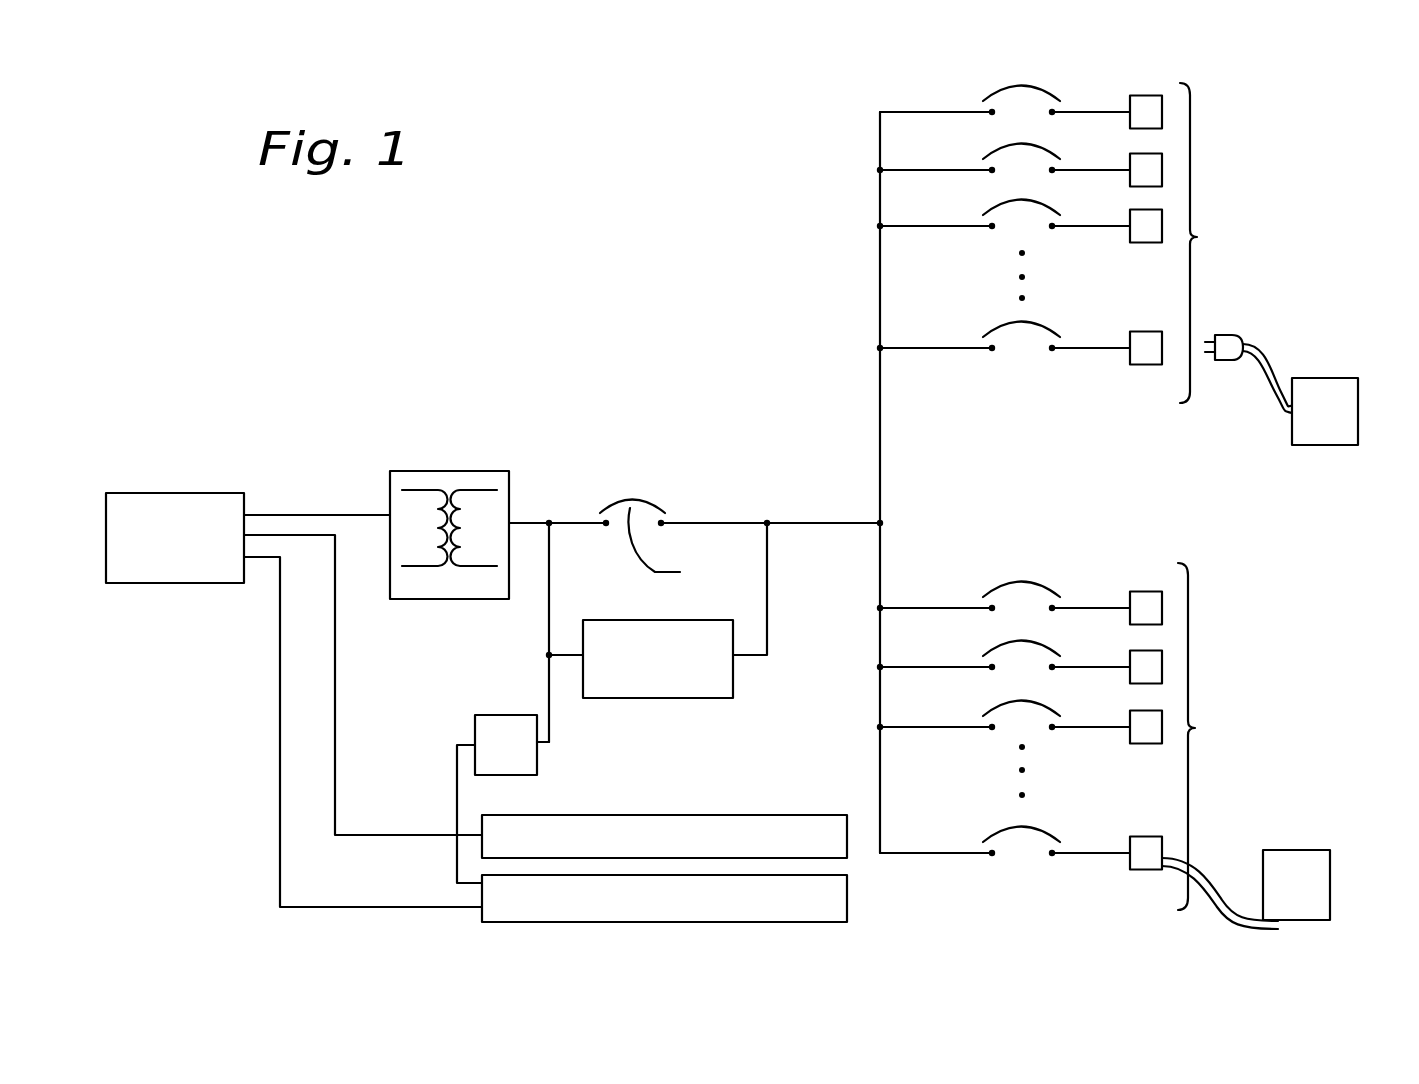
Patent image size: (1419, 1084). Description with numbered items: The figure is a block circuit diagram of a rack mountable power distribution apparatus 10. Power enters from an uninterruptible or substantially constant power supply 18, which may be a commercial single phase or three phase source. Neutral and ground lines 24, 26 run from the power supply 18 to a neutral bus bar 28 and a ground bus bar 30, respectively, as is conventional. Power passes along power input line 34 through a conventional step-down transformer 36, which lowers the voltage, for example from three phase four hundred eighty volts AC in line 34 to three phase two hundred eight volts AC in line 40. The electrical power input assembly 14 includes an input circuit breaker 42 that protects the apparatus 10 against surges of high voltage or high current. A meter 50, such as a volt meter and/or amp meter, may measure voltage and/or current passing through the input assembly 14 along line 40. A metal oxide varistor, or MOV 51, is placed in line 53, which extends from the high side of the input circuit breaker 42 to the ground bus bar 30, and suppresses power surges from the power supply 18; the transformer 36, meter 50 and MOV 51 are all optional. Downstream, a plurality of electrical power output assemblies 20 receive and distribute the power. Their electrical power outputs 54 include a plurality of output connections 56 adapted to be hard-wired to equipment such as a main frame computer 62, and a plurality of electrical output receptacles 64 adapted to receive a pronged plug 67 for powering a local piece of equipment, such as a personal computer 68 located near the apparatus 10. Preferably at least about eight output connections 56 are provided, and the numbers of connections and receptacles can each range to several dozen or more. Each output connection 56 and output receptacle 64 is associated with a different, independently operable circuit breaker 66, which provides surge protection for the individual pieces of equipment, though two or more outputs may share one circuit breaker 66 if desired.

The power distribution apparatus 10 is at (688, 337).
The electrical power input assembly 14 is at (393, 402).
The power supply 18 is at (212, 492).
The electrical power output assemblies 20 is at (848, 142).
The neutral line 24 is at (335, 658).
The ground line 26 is at (279, 665).
The neutral bus bar 28 is at (765, 814).
The ground bus bar 30 is at (850, 893).
The power input line 34 is at (328, 514).
The transformer 36 is at (462, 470).
The line 40 is at (535, 522).
The input circuit breaker 42 is at (668, 497).
The meter 50 is at (736, 684).
The metal oxide varistor (MOV) 51 is at (508, 714).
The line 53 is at (549, 688).
The electrical power outputs 54 is at (1183, 207).
The output connections 56 is at (1152, 591).
The main frame computer 62 is at (1309, 901).
The electrical output receptacles 64 is at (1162, 122).
The circuit breaker 66 is at (1050, 96).
The pronged plug 67 is at (1247, 342).
The personal computer 68 is at (1338, 427).